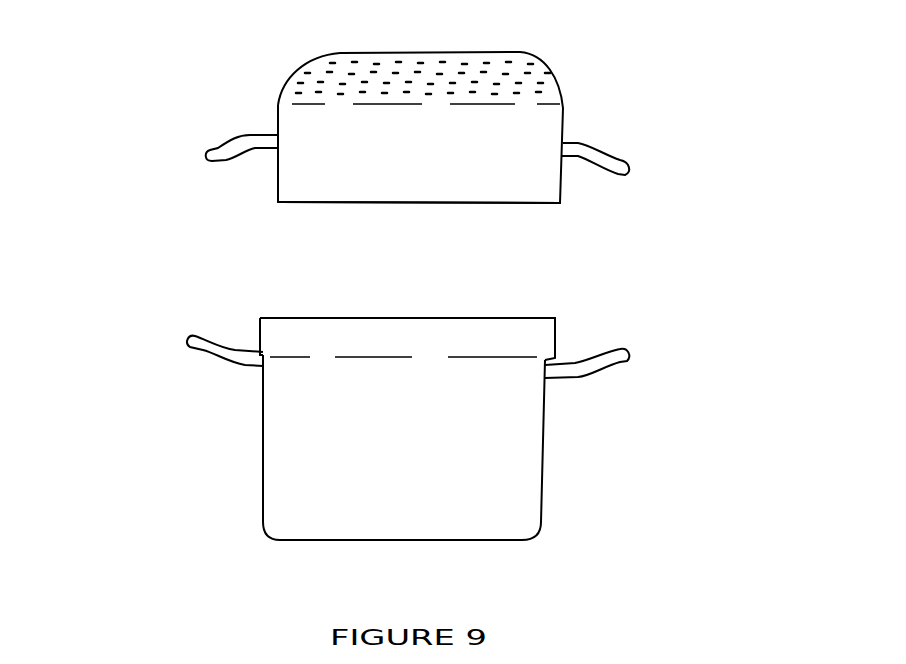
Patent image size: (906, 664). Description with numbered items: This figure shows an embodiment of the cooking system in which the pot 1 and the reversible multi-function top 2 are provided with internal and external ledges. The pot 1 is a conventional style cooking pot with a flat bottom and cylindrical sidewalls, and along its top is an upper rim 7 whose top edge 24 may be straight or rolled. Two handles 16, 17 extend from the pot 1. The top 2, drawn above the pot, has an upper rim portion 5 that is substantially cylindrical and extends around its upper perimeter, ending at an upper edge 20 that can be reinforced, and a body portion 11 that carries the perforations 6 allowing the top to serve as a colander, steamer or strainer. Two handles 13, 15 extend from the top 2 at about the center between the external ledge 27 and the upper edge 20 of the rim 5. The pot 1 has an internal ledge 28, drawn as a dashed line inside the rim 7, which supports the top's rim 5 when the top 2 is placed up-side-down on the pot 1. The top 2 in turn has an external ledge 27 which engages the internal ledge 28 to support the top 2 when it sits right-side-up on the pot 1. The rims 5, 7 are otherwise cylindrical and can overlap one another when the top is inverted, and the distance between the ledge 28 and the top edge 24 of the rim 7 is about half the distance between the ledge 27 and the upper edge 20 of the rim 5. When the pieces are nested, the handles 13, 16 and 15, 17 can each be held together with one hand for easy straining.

The pot 1 is at (422, 405).
The top 2 is at (434, 133).
The upper rim portion 5 is at (437, 193).
The perforations 6 is at (437, 55).
The upper rim 7 is at (424, 315).
The body portion 11 is at (355, 44).
The handle 13 is at (626, 165).
The handle 15 is at (224, 152).
The handle 16 is at (632, 361).
The handle 17 is at (206, 350).
The upper edge 20 is at (388, 203).
The top edge 24 is at (410, 318).
The external ledge 27 is at (276, 96).
The internal ledge 28 is at (397, 360).